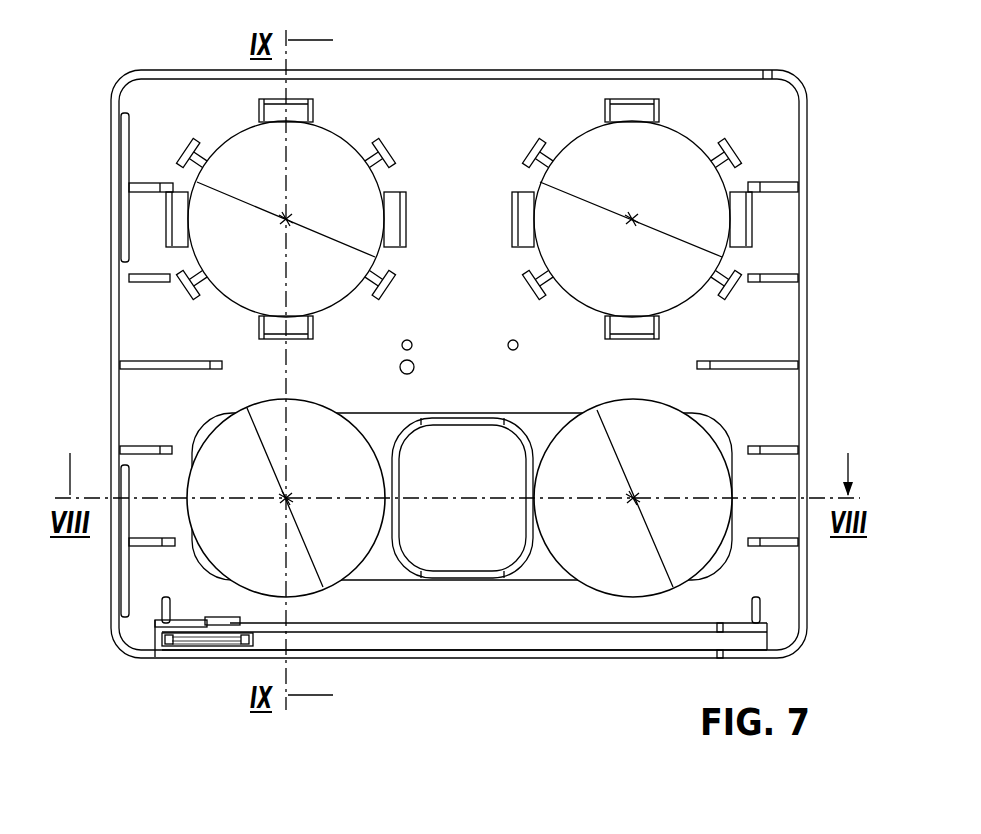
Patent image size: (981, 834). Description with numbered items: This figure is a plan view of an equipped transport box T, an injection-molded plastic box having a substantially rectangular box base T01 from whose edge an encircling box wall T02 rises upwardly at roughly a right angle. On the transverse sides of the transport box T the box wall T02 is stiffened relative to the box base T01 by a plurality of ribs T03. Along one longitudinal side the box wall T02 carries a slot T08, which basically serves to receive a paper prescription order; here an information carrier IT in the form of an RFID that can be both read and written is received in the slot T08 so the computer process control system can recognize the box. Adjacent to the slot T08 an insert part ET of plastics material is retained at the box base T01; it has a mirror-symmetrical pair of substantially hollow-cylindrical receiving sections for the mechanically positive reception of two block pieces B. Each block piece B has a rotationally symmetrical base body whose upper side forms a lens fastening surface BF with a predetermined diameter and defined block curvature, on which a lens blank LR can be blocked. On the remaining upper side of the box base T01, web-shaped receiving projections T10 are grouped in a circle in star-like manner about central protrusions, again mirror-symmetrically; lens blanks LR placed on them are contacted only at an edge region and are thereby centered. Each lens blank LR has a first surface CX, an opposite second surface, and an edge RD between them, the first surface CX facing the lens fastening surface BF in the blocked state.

The transport box T is at (815, 90).
The box wall T02 is at (802, 380).
The ribs T03 is at (158, 542).
The edge RD is at (222, 143).
The lens blank LR is at (318, 140).
The receiving projections T10 is at (312, 100).
The first surface CX is at (633, 212).
The box base T01 is at (493, 360).
The block piece B is at (305, 418).
The lens fastening surface BF is at (598, 470).
The insert part ET is at (522, 432).
The slot T08 is at (402, 637).
The information carrier IT is at (218, 639).